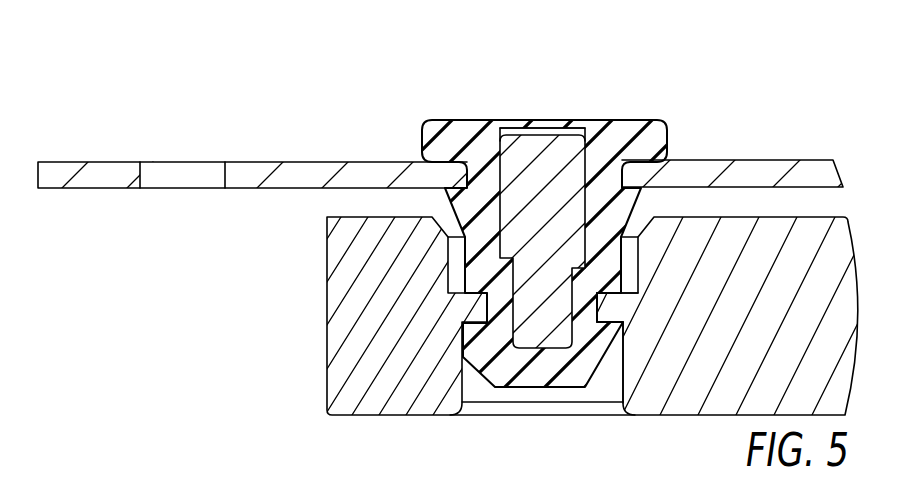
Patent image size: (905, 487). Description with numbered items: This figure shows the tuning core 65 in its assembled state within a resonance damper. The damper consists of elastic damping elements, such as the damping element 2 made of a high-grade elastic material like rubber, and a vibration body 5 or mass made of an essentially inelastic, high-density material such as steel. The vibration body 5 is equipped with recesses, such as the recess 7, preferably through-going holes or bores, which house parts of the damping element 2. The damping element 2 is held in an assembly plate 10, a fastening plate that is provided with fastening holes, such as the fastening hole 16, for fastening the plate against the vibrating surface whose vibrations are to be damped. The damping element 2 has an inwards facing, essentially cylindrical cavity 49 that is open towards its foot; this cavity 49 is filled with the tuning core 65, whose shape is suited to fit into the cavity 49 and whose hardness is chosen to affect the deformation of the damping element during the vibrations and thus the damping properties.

The elastic damping element 2 is at (656, 105).
The vibration body 5 is at (312, 392).
The recess 7 is at (614, 377).
The assembly plate 10 is at (268, 152).
The fastening hole 16 is at (225, 174).
The cavity 49 is at (515, 163).
The tuning core 65 is at (548, 112).